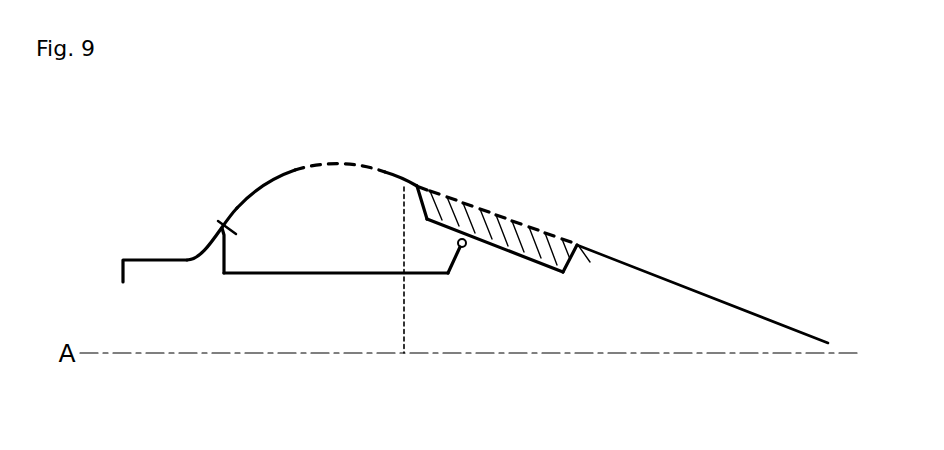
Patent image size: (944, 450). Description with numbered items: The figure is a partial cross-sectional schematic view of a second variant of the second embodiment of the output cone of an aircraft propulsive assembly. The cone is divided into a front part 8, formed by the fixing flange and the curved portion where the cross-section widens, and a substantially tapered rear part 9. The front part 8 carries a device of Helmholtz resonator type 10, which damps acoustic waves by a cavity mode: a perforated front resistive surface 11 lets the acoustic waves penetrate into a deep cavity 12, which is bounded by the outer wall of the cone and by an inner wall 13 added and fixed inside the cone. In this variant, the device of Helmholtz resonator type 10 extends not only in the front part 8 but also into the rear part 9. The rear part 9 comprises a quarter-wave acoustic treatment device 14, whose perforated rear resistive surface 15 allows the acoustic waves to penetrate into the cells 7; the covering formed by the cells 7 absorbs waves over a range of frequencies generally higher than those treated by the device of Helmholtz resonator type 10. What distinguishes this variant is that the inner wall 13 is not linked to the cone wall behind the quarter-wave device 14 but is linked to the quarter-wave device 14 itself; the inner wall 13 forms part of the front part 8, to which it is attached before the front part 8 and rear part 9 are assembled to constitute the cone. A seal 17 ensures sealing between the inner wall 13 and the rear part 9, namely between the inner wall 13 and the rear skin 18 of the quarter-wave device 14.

The cells 7 is at (505, 228).
The front part 8 is at (404, 363).
The rear part 9 is at (404, 363).
The device of Helmholtz resonator type 10 is at (285, 285).
The front resistive surface 11 is at (339, 163).
The cavity 12 is at (277, 205).
The inner wall 13 is at (380, 273).
The quarter-wave acoustic treatment device 14 is at (504, 263).
The rear resistive surface 15 is at (550, 228).
The seal 17 is at (466, 246).
The rear skin 18 is at (530, 263).